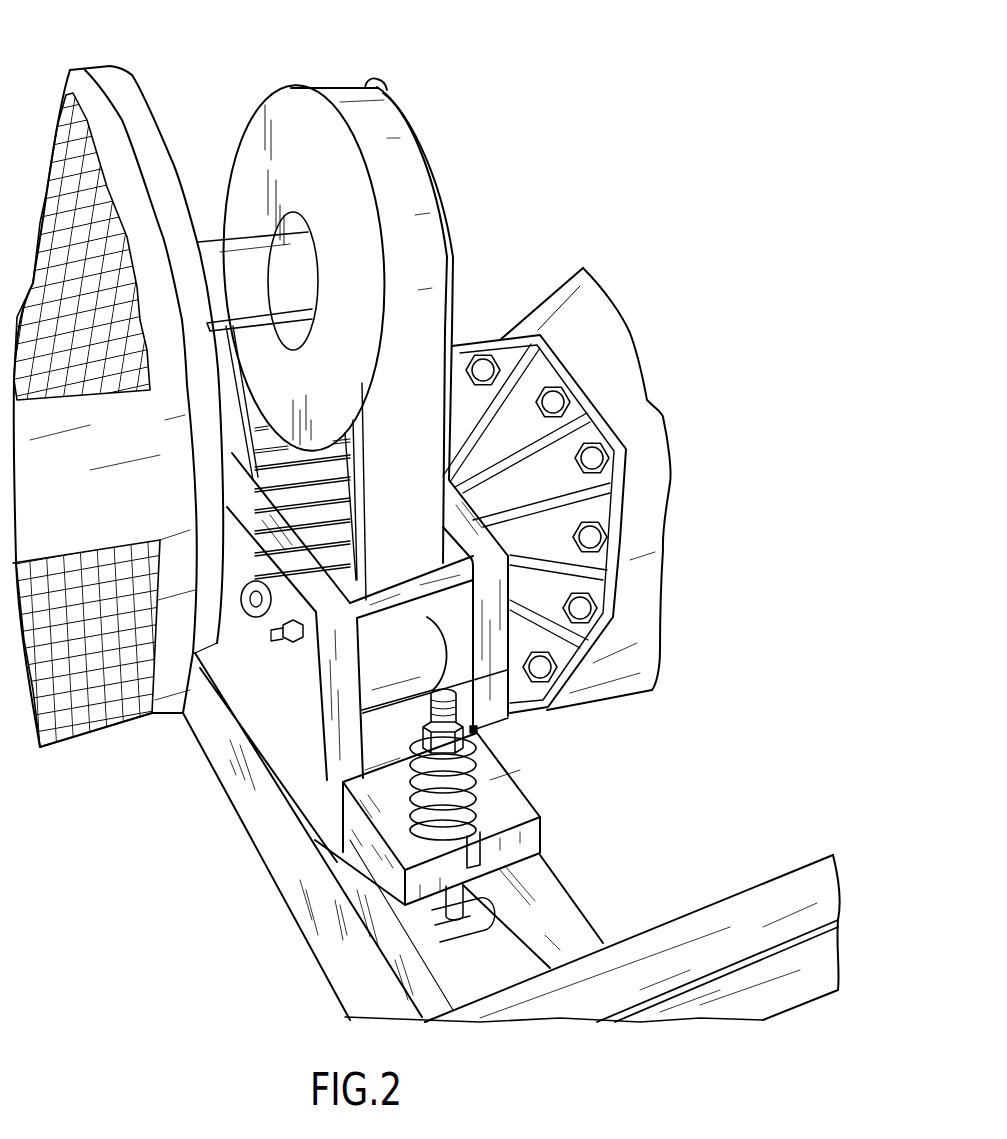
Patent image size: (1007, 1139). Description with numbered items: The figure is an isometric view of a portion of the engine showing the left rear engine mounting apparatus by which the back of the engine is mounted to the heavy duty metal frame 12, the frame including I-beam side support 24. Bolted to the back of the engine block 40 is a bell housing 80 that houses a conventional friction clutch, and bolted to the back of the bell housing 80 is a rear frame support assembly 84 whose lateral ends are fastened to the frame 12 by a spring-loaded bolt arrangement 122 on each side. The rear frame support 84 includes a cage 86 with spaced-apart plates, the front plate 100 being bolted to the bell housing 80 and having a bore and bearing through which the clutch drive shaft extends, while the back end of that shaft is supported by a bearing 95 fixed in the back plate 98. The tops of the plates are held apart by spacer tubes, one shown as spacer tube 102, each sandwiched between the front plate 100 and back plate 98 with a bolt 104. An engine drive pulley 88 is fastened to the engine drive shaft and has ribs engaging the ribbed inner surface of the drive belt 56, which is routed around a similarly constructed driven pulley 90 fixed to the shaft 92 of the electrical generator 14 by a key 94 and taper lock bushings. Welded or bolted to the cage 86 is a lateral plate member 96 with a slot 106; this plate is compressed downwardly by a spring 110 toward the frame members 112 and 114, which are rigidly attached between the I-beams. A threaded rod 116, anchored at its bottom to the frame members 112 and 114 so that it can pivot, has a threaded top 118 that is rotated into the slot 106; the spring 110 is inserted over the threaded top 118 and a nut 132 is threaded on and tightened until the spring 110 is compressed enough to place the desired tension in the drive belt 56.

The heavy duty metal frame 12 is at (478, 930).
The electrical generator 14 is at (105, 733).
The I-beam side support 24 is at (838, 875).
The engine block 40 is at (657, 433).
The drive belt 56 is at (442, 330).
The bell housing 80 is at (597, 508).
The rear frame support assembly 84 is at (205, 818).
The cage 86 is at (276, 666).
The engine drive pulley 88 is at (317, 553).
The driven pulley 90 is at (252, 138).
The generator shaft 92 is at (286, 252).
The key 94 is at (280, 330).
The bearing 95 is at (243, 597).
The lateral plate member 96 is at (522, 808).
The back plate 98 is at (345, 690).
The front plate 100 is at (470, 640).
The spacer tube 102 is at (395, 605).
The bolt 104 is at (291, 652).
The slot 106 is at (482, 860).
The spring 110 is at (415, 790).
The frame member 112 is at (343, 880).
The frame member 114 is at (570, 910).
The threaded rod 116 is at (433, 900).
The threaded top 118 is at (447, 692).
The spring-loaded bolt arrangement 122 is at (514, 765).
The nut 132 is at (477, 730).